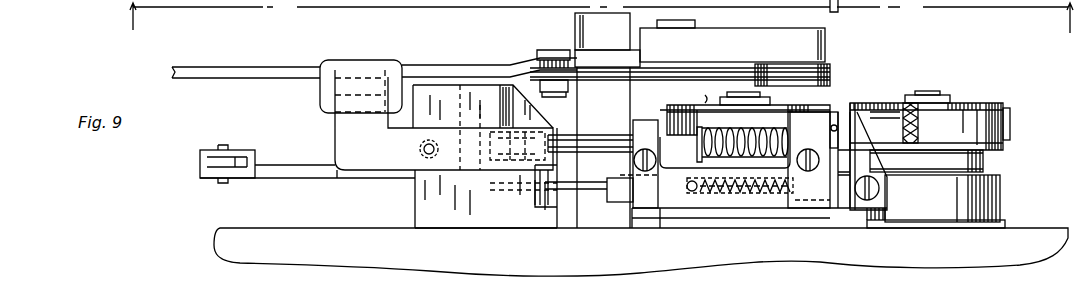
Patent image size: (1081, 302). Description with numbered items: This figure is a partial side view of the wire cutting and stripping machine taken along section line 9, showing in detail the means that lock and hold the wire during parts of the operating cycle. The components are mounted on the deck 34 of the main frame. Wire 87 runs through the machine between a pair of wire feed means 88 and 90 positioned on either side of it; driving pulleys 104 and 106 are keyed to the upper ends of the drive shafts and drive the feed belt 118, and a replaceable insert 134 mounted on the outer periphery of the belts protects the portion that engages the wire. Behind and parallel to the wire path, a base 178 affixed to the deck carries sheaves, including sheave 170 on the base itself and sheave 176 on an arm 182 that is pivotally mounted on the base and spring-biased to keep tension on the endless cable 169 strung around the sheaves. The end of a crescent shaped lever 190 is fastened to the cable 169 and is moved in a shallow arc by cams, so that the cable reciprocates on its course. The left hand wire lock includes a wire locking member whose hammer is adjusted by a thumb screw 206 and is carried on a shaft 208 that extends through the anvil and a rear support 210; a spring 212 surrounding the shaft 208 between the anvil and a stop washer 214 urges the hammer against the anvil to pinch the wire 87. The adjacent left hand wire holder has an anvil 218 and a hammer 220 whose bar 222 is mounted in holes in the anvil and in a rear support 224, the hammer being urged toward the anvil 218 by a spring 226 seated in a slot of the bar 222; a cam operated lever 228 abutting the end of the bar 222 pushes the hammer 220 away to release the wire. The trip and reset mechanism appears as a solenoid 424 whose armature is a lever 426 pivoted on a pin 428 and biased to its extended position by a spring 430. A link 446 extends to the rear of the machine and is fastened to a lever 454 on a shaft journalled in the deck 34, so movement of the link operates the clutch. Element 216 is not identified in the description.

The section line 9 is at (601, 20).
The deck 34 is at (1030, 227).
The wire stock 87 is at (833, 13).
The wire feed means 88 is at (1015, 119).
The wire feed means 90 is at (692, 100).
The driving pulley 104 is at (988, 103).
The driving pulley 106 is at (700, 99).
The belt 118 is at (1002, 134).
The replaceable insert 134 is at (963, 117).
The endless cable 169 is at (702, 75).
The sheave 170 is at (640, 68).
The sheave 176 is at (840, 69).
The base 178 is at (580, 18).
The arm 182 is at (760, 28).
The crescent shaped lever 190 is at (418, 70).
The thumb screw 206 is at (902, 104).
The shaft 208 is at (745, 137).
The support 210 is at (645, 128).
The spring 212 is at (745, 149).
The stop washer 214 is at (707, 135).
The rod 216 is at (562, 145).
The anvil 218 is at (725, 160).
The hammer 220 is at (862, 147).
The bar 222 is at (740, 197).
The rear support 224 is at (648, 195).
The spring 226 is at (762, 200).
The cam operated lever 228 is at (601, 192).
The solenoid 424 is at (322, 97).
The armature lever 426 is at (350, 133).
The pin 428 is at (465, 90).
The spring 430 is at (418, 150).
The link 446 is at (310, 172).
The lever 454 is at (202, 163).